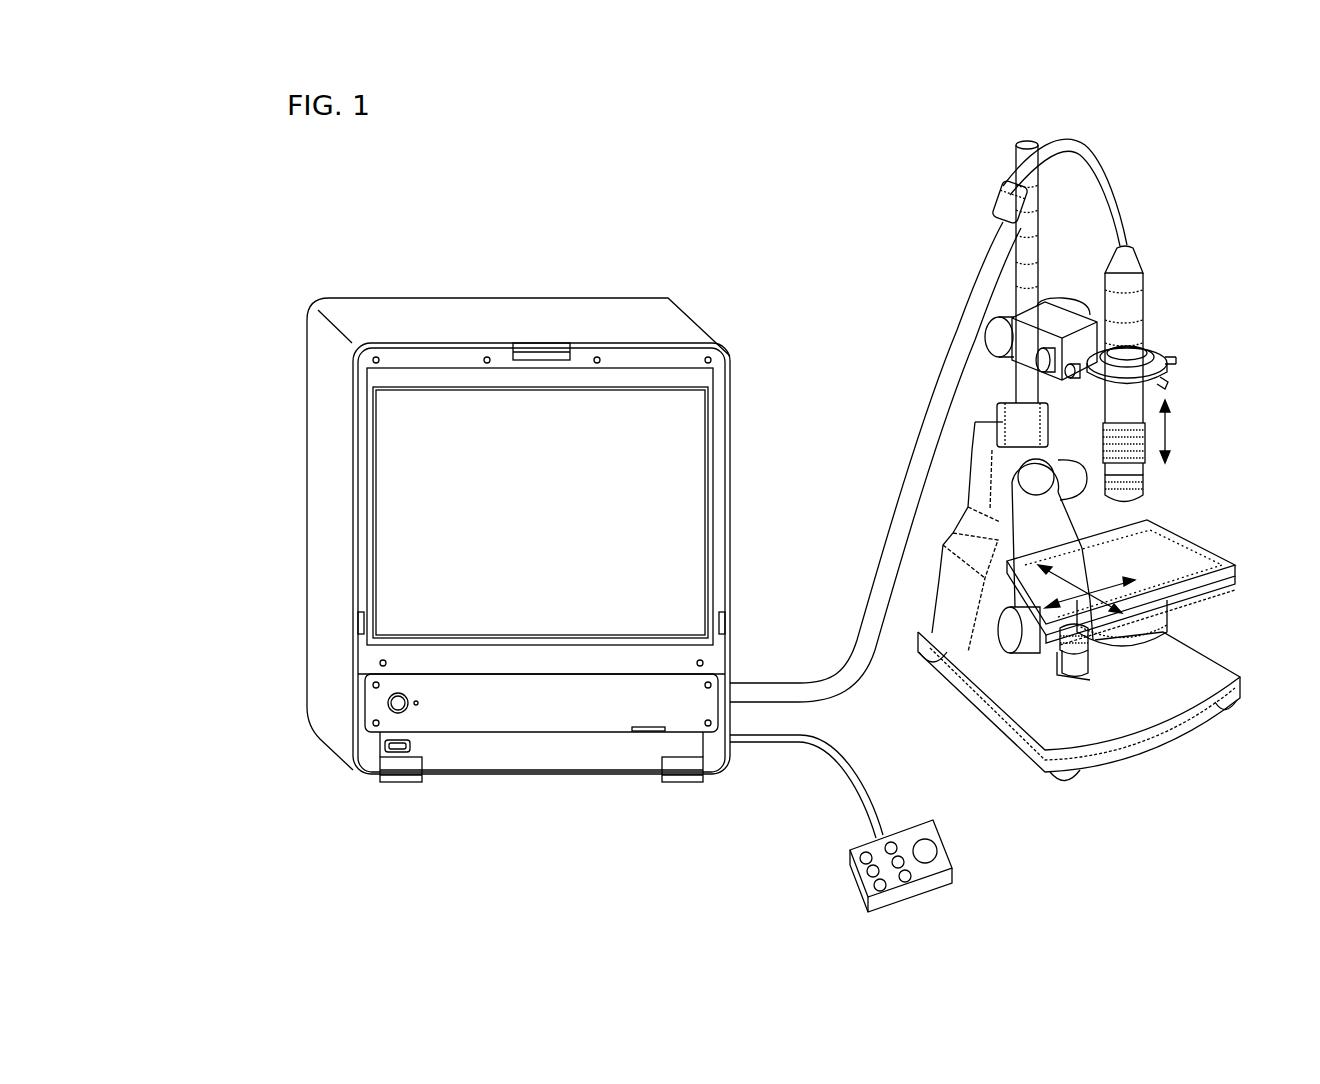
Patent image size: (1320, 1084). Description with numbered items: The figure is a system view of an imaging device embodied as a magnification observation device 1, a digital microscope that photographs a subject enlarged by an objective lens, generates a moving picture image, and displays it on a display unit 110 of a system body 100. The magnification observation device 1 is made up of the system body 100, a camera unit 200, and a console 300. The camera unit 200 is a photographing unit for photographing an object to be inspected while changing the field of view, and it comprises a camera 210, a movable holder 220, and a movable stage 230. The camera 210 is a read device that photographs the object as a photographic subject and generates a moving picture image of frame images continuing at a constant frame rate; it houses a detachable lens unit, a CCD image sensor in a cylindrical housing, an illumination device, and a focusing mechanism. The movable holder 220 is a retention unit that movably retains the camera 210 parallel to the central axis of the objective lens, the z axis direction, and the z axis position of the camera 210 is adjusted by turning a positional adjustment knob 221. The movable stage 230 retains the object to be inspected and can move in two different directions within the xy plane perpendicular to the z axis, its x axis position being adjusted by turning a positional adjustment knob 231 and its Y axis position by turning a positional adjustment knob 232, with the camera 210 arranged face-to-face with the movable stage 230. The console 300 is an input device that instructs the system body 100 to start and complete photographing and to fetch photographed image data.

The magnification observation device 1 is at (922, 122).
The system body 100 is at (690, 316).
The display unit 110 is at (708, 466).
The camera unit 200 is at (1180, 322).
The camera 210 is at (1142, 295).
The movable holder 220 is at (1167, 358).
The positional adjustment knob 221 is at (998, 332).
The movable stage 230 is at (1200, 541).
The positional adjustment knob 231 is at (1060, 634).
The positional adjustment knob 232 is at (1075, 662).
The console 300 is at (948, 840).